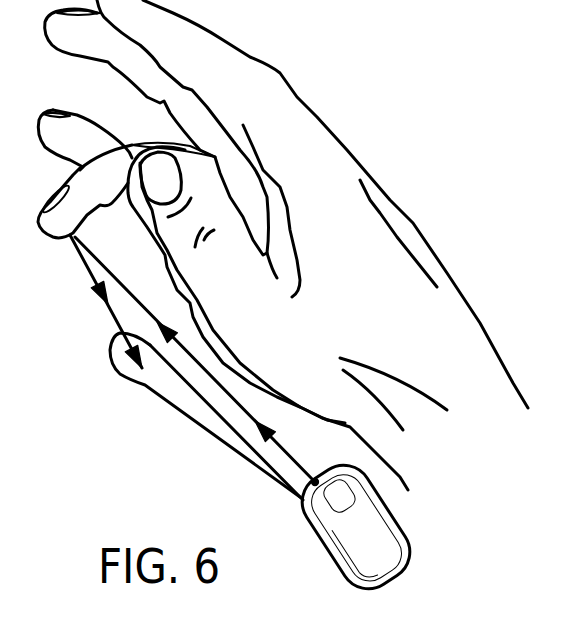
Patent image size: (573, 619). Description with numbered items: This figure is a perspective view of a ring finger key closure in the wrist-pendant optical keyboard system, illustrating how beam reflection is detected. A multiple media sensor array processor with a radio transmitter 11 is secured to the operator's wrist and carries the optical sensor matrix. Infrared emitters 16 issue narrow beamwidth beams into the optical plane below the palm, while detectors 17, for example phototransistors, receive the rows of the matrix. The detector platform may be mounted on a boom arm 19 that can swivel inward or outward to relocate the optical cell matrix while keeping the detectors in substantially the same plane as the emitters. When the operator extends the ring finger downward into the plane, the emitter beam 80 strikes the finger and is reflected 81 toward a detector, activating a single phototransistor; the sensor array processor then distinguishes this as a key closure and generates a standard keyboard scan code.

The multiple media sensor array processor with a radio transmitter 11 is at (367, 527).
The infrared emitters 16 is at (314, 484).
The detectors 17 is at (133, 369).
The boom arm 19 is at (249, 444).
The emitter beam 80 is at (222, 390).
The reflected beam 81 is at (107, 313).